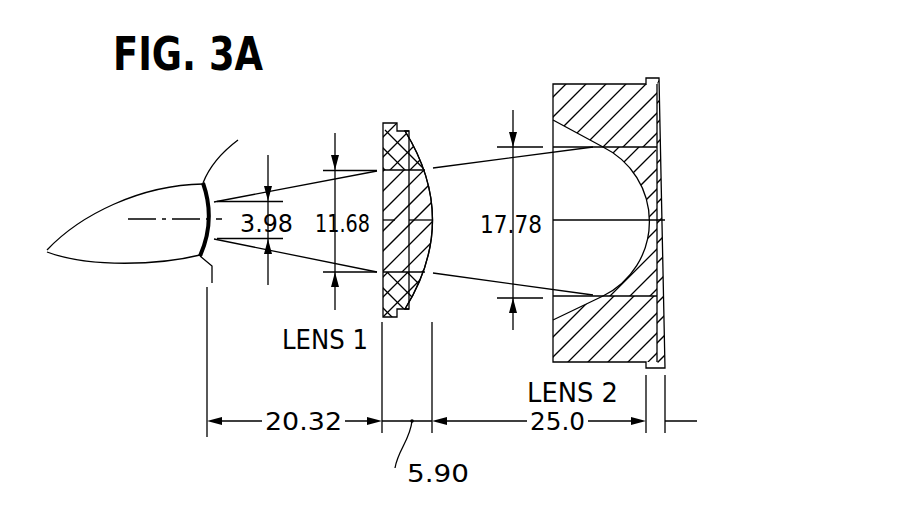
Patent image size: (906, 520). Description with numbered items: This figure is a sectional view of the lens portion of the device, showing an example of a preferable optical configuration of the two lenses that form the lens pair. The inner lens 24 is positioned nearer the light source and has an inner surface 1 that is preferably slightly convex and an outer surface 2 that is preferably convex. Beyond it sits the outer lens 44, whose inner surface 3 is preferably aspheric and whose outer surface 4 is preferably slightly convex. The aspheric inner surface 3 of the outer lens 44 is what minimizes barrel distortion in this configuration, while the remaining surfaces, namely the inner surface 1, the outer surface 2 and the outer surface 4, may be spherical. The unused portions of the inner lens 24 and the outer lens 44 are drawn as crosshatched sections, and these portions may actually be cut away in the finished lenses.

The inner surface 1 is at (404, 285).
The outer surface 2 is at (438, 202).
The inner lens 24 is at (422, 145).
The inner surface 3 is at (571, 265).
The outer surface 4 is at (645, 225).
The outer lens 44 is at (605, 84).